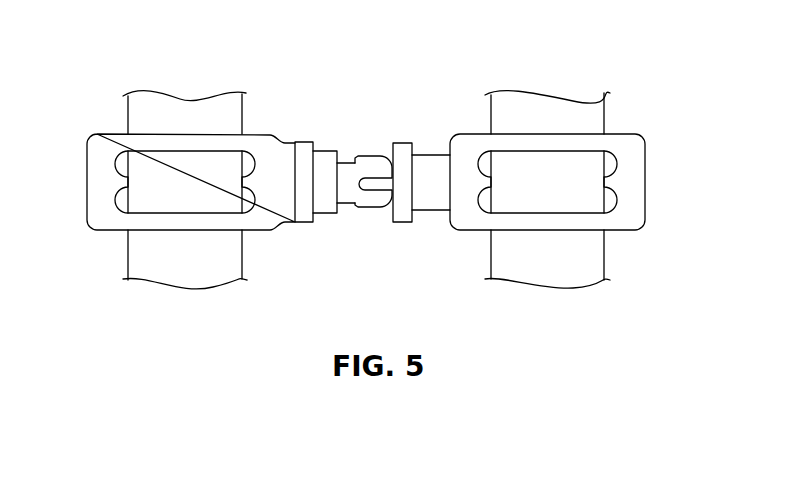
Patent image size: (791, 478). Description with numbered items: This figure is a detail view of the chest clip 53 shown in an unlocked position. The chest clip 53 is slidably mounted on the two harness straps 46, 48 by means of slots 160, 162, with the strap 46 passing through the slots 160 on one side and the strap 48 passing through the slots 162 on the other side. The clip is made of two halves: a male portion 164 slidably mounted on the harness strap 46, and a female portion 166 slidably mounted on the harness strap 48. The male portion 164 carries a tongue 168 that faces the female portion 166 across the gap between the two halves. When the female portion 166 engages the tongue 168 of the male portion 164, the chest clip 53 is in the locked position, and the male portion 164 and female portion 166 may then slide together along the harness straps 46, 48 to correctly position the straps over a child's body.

The harness strap 46 is at (185, 105).
The harness strap 48 is at (547, 105).
The chest clip 53 is at (655, 78).
The slot 160 is at (117, 163).
The slot 162 is at (615, 165).
The male portion 164 is at (325, 160).
The female portion 166 is at (427, 162).
The tongue 168 is at (373, 197).